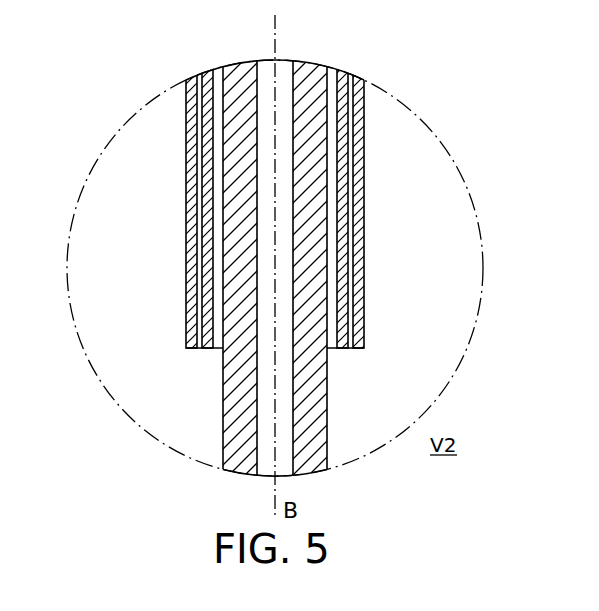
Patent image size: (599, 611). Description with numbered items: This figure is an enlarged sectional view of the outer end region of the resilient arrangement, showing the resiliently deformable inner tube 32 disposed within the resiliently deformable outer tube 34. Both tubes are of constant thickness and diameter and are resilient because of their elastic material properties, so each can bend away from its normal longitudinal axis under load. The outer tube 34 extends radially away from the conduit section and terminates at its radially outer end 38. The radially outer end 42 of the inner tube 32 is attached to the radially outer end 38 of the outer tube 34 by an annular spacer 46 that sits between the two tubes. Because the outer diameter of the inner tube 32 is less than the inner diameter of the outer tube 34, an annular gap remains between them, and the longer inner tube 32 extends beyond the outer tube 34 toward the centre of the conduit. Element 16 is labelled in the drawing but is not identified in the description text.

The tubular body 16 is at (312, 72).
The inner tube 32 is at (208, 127).
The outer tube 34 is at (362, 143).
The radially outer end of the outer tube 38 is at (358, 307).
The radially outer end of the inner tube 42 is at (207, 318).
The annular spacer 46 is at (345, 240).